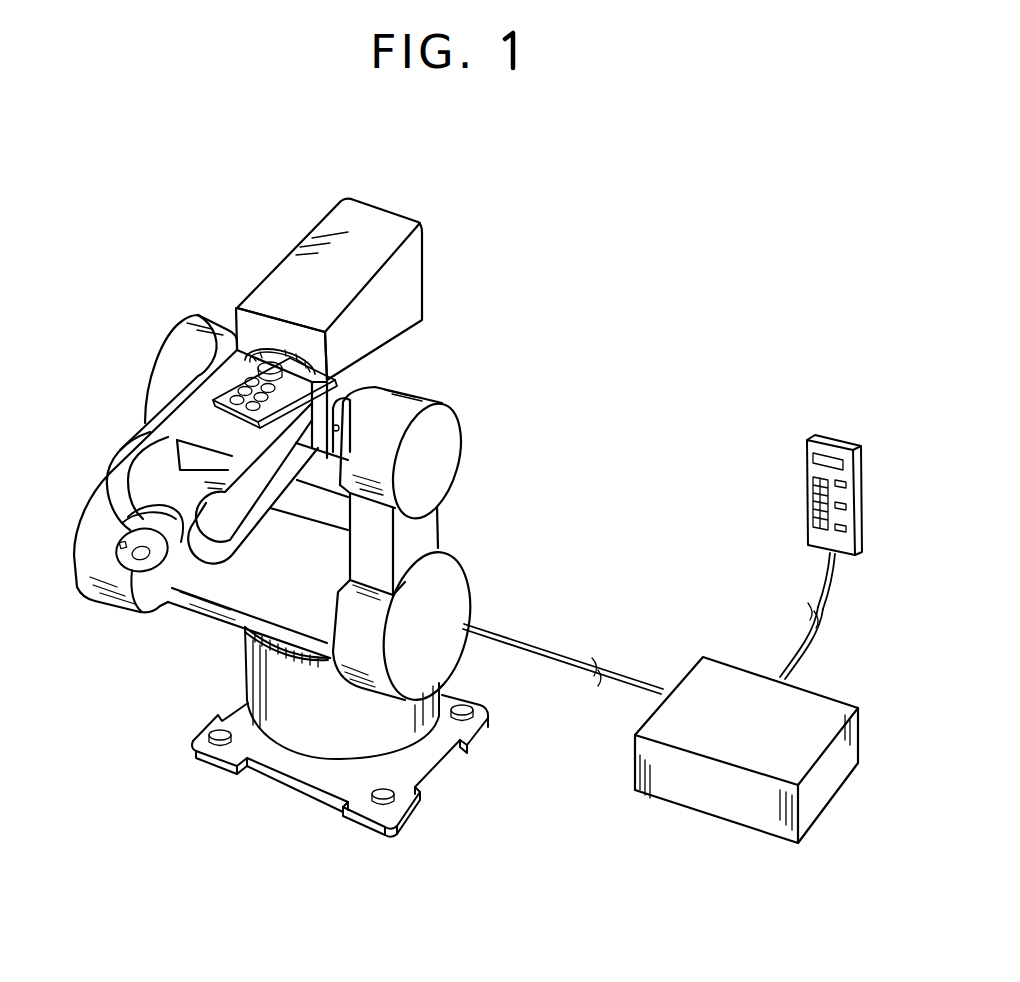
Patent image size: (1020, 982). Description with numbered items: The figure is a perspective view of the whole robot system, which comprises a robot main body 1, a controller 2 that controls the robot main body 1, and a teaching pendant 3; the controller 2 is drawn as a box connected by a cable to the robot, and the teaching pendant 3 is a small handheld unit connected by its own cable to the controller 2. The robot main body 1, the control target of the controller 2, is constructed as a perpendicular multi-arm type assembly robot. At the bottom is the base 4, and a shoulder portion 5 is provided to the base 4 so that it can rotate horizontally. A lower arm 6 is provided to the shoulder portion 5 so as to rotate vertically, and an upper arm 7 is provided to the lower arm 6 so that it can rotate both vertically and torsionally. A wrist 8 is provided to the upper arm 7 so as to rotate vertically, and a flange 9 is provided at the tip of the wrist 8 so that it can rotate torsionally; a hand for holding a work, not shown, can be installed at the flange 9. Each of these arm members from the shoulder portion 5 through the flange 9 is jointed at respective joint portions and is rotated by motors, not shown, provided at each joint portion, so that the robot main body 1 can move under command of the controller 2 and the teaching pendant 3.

The robot main body 1 is at (452, 370).
The controller 2 is at (682, 808).
The teaching pendant 3 is at (863, 452).
The base 4 is at (245, 675).
The shoulder portion 5 is at (193, 603).
The lower arm 6 is at (440, 518).
The upper arm 7 is at (257, 510).
The wrist 8 is at (157, 507).
The flange 9 is at (117, 555).